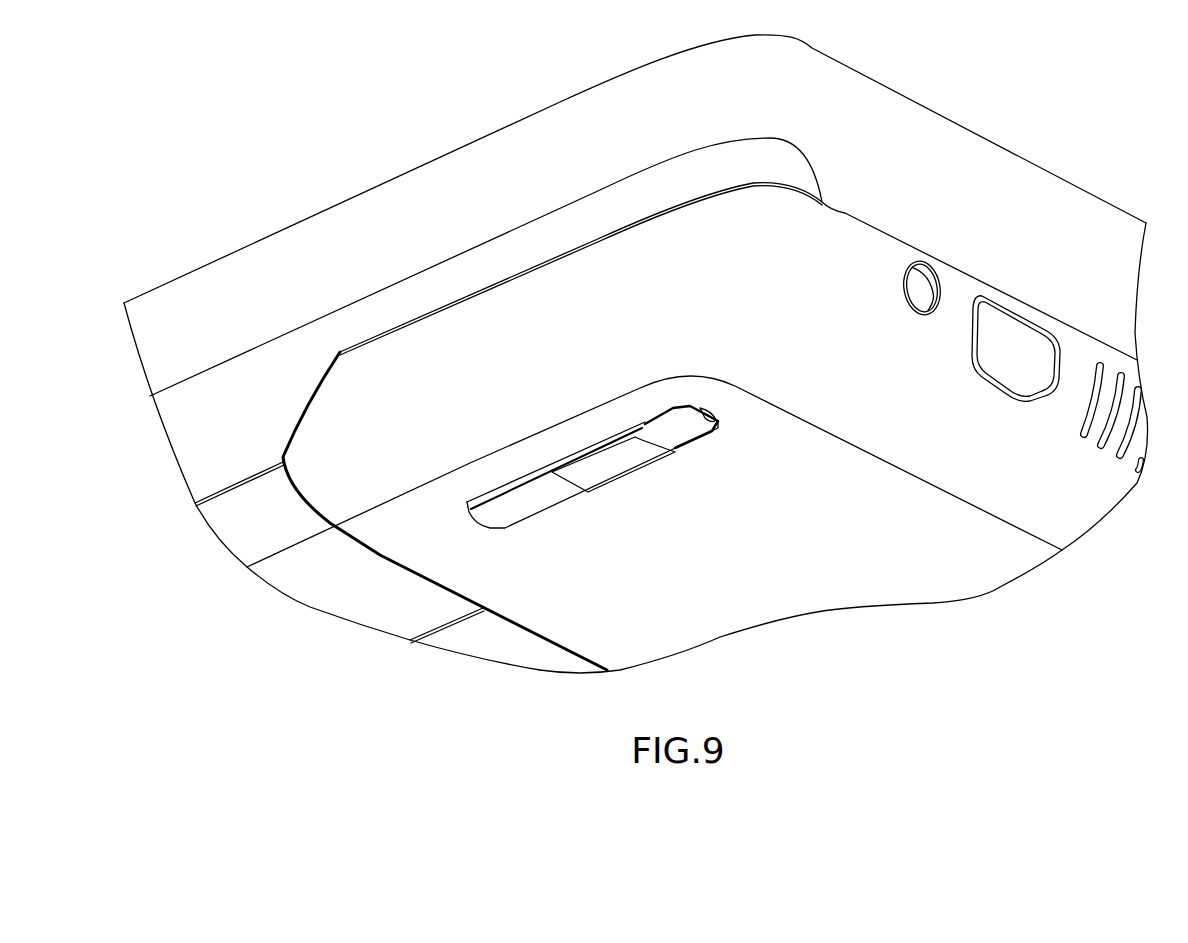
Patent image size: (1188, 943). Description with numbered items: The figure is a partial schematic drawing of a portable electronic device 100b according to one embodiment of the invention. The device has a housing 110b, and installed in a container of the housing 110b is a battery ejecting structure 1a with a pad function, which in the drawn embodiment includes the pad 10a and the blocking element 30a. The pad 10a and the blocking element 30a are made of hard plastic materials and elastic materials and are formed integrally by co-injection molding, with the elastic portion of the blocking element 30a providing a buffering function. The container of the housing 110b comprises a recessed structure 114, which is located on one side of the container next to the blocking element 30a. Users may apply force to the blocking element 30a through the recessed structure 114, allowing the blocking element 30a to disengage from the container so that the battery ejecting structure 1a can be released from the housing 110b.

The portable electronic device 100b is at (297, 183).
The housing 110b is at (932, 578).
The pad 10a is at (612, 463).
The blocking element 30a is at (695, 427).
The recessed structure 114 is at (703, 410).
The battery ejecting structure 1a is at (675, 530).